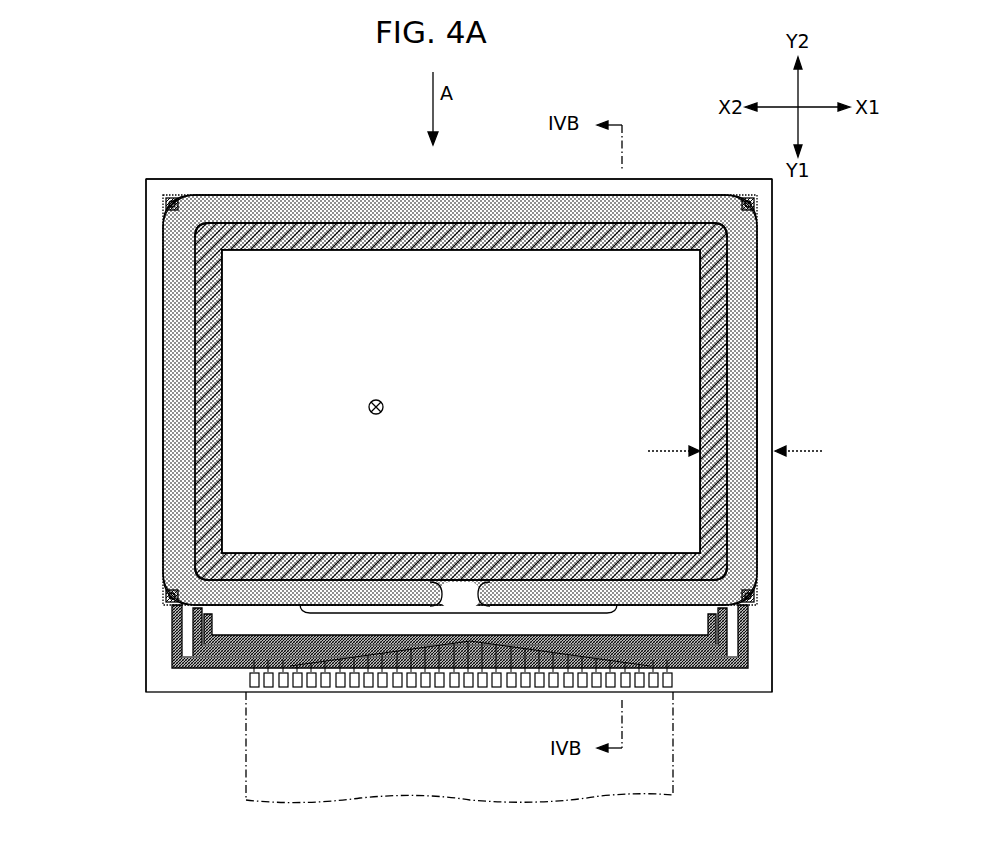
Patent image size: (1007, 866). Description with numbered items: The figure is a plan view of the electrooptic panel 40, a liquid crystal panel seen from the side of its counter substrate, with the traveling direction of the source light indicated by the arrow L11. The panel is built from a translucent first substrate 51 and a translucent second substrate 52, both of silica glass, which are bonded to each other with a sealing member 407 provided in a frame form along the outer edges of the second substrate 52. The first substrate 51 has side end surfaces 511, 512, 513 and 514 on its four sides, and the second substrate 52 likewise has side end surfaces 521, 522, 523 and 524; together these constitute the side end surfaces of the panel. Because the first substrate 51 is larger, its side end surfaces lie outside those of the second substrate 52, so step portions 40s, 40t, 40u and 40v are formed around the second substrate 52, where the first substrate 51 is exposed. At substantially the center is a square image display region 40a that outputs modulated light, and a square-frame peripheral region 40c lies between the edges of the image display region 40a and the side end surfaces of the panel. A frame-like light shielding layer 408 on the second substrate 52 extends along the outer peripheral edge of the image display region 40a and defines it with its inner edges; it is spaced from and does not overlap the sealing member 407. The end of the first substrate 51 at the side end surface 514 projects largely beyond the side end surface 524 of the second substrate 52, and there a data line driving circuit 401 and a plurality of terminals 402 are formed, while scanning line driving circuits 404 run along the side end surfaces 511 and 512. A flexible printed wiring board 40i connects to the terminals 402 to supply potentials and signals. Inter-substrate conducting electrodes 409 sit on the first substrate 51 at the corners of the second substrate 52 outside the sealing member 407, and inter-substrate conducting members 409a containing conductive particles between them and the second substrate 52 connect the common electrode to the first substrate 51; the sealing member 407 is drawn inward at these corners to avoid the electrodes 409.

The electrooptic panel 40 is at (655, 120).
The image display region 40a is at (270, 400).
The peripheral region 40c is at (742, 455).
The flexible printed wiring board 40i is at (674, 766).
The step portion 40s is at (163, 328).
The step portion 40t is at (760, 388).
The step portion 40u is at (378, 196).
The step portion 40v is at (300, 598).
The first substrate 51 is at (186, 692).
The second substrate 52 is at (268, 600).
The data line driving circuit 401 is at (680, 628).
The terminals 402 is at (471, 688).
The scanning line driving circuit 404 is at (190, 580).
The sealing member 407 is at (745, 340).
The light shielding layer 408 is at (720, 285).
The inter-substrate conducting electrode 409 is at (172, 200).
The inter-substrate conducting member 409a is at (167, 200).
The side end surface 511 is at (146, 425).
The side end surface 512 is at (772, 492).
The side end surface 513 is at (263, 179).
The side end surface 514 is at (395, 665).
The side end surface 521 is at (163, 455).
The side end surface 522 is at (757, 515).
The side end surface 523 is at (316, 196).
The side end surface 524 is at (386, 614).
The arrow indicating traveling direction of source light L11 is at (422, 408).